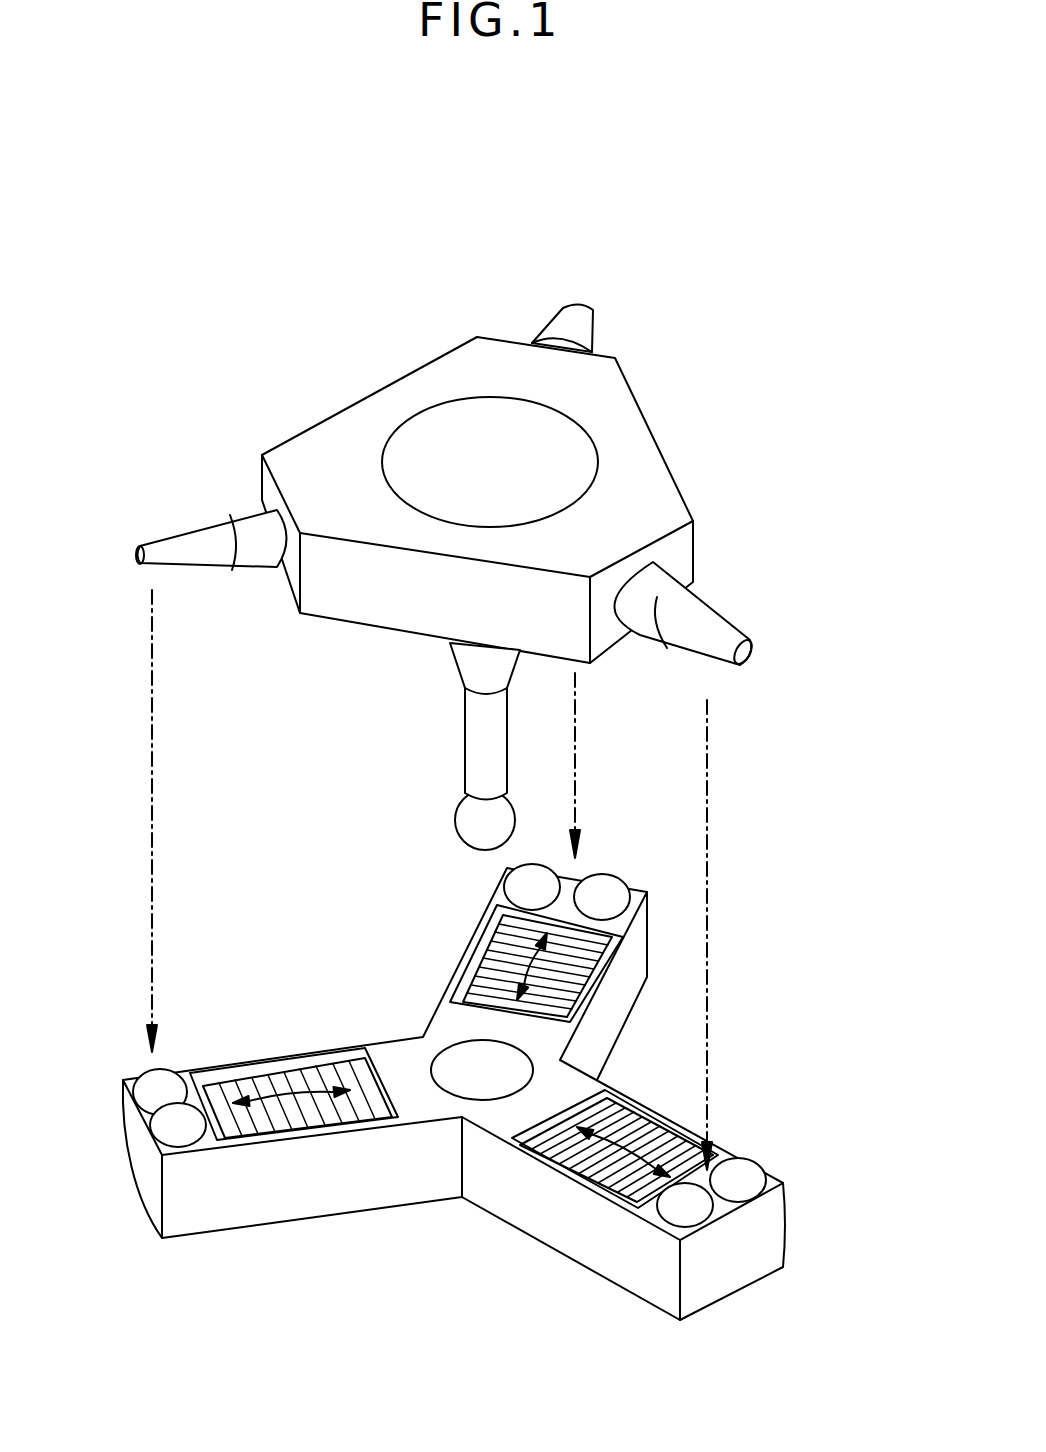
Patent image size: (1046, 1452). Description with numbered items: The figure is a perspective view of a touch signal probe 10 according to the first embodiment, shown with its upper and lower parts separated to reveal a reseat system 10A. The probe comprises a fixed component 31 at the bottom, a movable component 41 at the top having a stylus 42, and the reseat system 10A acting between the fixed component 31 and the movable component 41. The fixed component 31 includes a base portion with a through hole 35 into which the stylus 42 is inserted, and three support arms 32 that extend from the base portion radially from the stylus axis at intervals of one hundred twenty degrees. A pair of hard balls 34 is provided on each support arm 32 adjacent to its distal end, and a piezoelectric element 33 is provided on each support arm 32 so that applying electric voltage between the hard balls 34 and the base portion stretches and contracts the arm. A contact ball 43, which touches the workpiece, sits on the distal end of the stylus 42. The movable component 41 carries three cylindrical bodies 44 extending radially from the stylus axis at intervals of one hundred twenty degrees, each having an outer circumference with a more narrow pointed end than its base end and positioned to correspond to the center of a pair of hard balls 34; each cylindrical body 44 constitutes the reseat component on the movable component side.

The touch signal probe 10 is at (330, 237).
The reseat system 10A is at (483, 978).
The fixed component 31 is at (423, 1102).
The support arm 32 is at (603, 1027).
The piezoelectric element 33 is at (270, 1080).
The hard ball 34 is at (532, 880).
The through hole 35 is at (477, 1082).
The movable component 41 is at (633, 413).
The stylus 42 is at (482, 745).
The contact ball 43 is at (473, 827).
The cylindrical body 44 is at (577, 325).